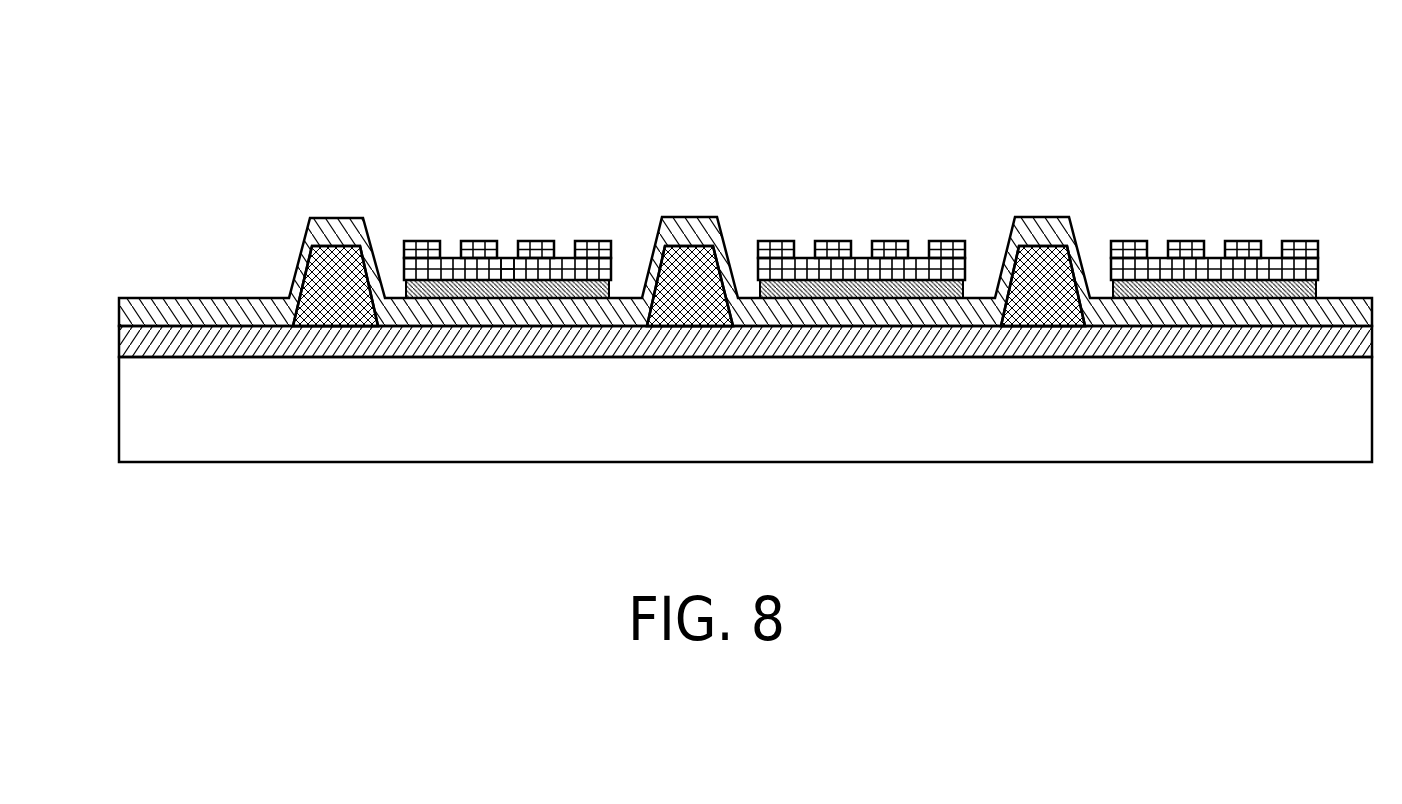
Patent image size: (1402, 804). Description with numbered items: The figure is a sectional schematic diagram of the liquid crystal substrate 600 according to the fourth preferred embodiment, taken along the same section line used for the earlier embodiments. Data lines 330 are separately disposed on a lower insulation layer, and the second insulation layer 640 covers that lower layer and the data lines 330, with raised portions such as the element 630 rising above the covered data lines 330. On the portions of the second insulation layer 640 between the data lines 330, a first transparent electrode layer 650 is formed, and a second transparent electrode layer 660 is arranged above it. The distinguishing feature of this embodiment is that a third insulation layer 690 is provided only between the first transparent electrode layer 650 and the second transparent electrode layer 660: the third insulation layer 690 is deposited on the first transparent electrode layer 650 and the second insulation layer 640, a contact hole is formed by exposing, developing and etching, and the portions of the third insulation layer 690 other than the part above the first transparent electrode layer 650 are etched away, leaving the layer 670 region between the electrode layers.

The liquid crystal substrate 600 is at (140, 93).
The data line 330 is at (688, 245).
The bank 630 is at (337, 245).
The second insulation layer 640 is at (188, 298).
The first transparent electrode layer 650 is at (613, 288).
The second transparent electrode layer 660 is at (432, 242).
The light emitting layer 670 is at (452, 258).
The third insulation layer 690 is at (508, 267).